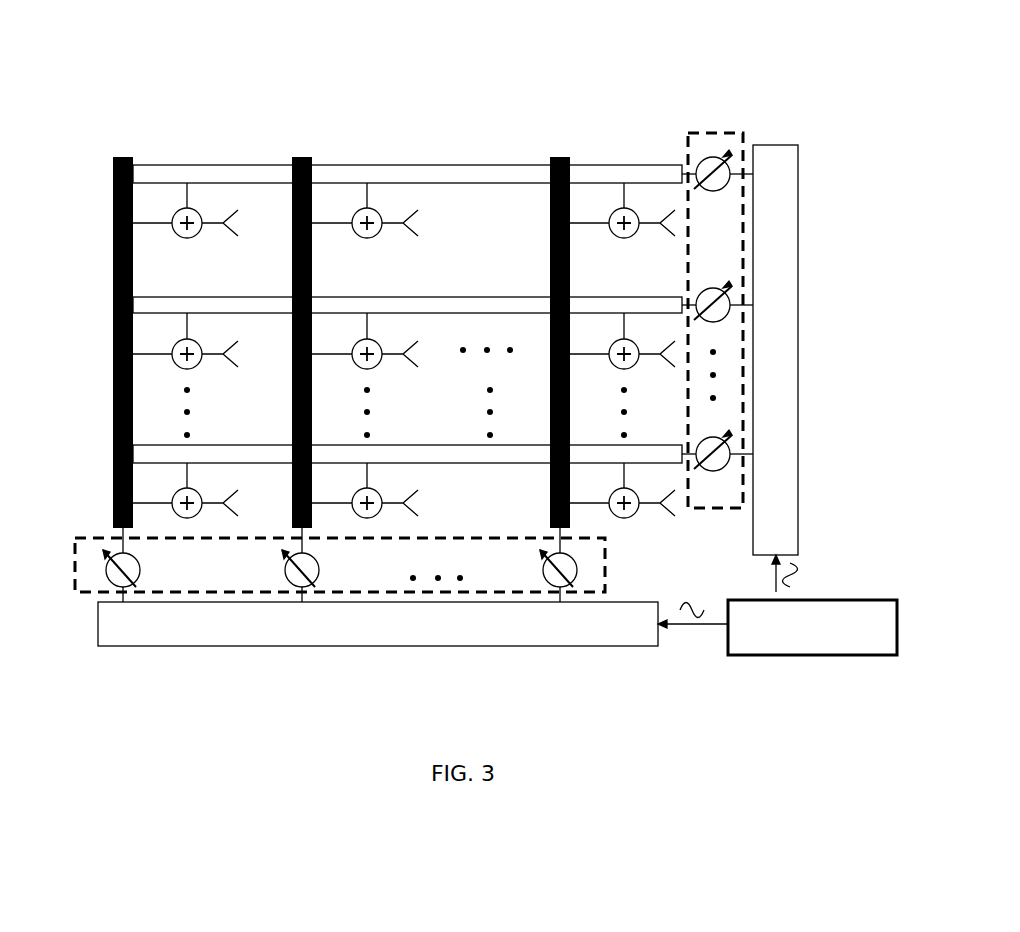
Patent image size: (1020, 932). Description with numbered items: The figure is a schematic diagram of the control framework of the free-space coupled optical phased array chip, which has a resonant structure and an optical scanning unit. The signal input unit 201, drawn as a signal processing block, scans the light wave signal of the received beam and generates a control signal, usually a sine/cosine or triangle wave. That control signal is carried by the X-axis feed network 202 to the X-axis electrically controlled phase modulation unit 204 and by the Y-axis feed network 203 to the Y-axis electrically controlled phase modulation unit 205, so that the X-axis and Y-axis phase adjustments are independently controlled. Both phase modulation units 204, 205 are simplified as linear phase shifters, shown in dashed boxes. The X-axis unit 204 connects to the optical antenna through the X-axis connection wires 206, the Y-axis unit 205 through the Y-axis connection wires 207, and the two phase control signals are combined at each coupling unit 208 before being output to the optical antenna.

The signal input unit 201 is at (728, 655).
The X-axis feed network 202 is at (222, 650).
The Y-axis feed network 203 is at (790, 145).
The X-axis electrically controlled phase modulation unit 204 is at (77, 539).
The Y-axis electrically controlled phase modulation unit 205 is at (688, 133).
The X-axis connection wire 206 is at (115, 155).
The Y-axis connection wire 207 is at (172, 165).
The coupling unit 208 is at (377, 235).